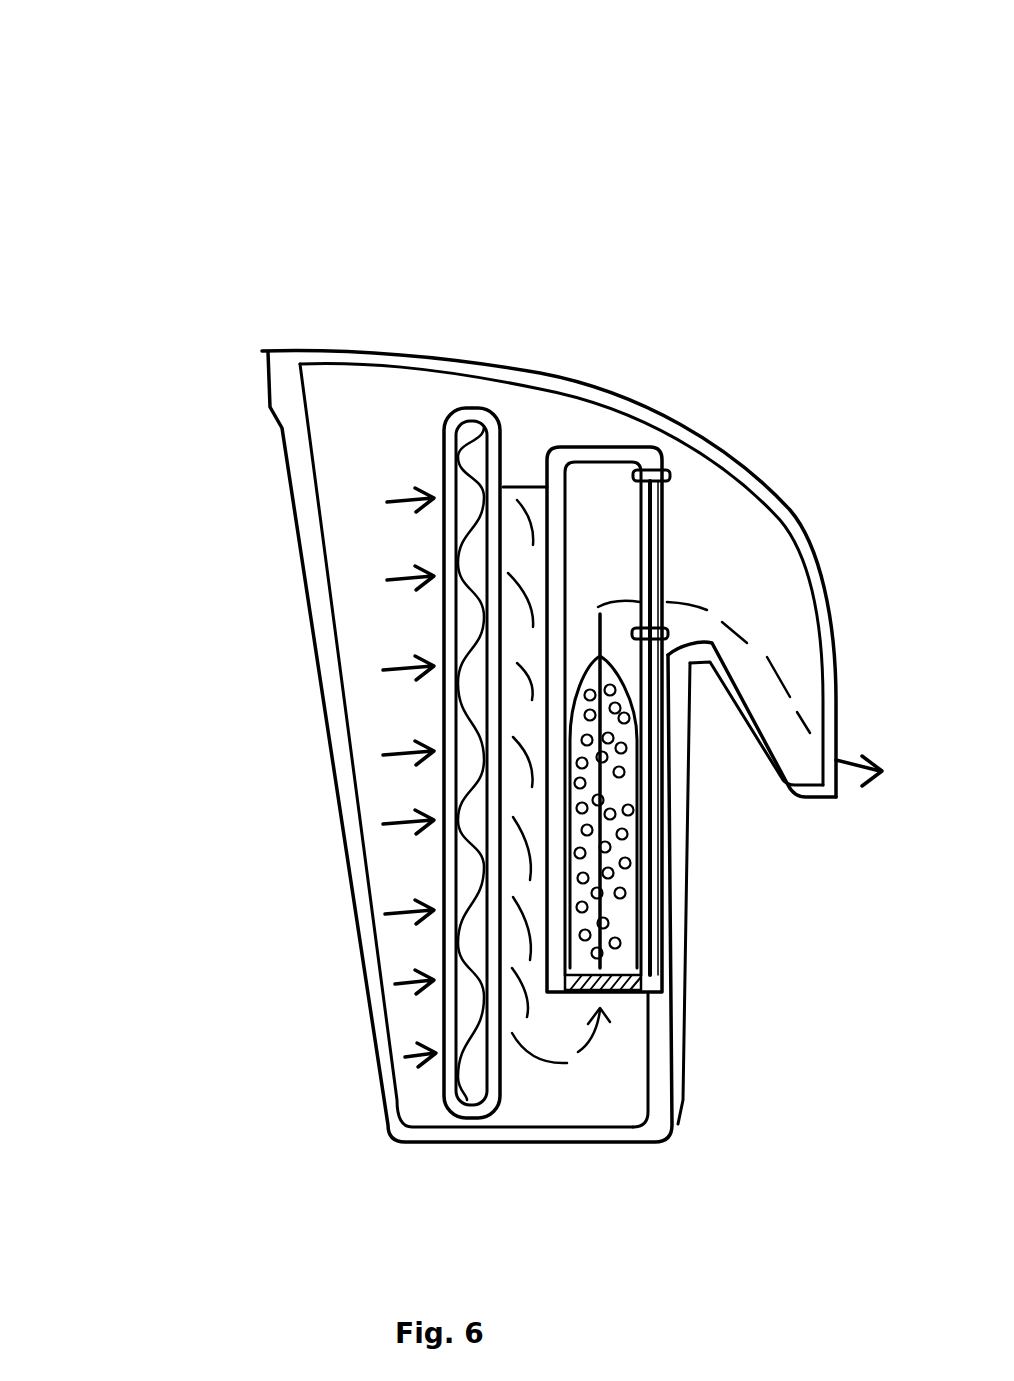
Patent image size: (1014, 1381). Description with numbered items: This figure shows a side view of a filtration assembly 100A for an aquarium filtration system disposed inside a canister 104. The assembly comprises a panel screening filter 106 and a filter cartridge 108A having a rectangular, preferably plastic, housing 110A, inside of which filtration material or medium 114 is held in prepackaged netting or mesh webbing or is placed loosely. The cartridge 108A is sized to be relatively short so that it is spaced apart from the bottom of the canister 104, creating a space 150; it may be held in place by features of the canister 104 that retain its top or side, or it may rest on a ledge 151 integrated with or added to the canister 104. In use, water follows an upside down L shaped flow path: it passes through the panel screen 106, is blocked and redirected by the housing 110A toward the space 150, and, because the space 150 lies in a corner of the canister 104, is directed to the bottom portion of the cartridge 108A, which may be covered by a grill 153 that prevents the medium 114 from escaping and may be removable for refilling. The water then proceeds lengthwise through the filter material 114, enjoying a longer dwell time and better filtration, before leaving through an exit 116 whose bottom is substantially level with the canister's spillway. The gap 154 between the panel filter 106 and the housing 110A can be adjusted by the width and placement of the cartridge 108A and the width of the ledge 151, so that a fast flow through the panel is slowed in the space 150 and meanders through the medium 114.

The filtration assembly 100A is at (161, 85).
The canister 104 is at (290, 517).
The panel screening filter 106 is at (450, 800).
The gap 154 is at (527, 487).
The filter cartridge 108A is at (570, 447).
The housing 110A is at (640, 447).
The exit 116 is at (650, 550).
The filtration material or medium 114 is at (615, 908).
The grill 153 is at (628, 984).
The ledge 151 is at (648, 1023).
The space 150 is at (602, 1077).